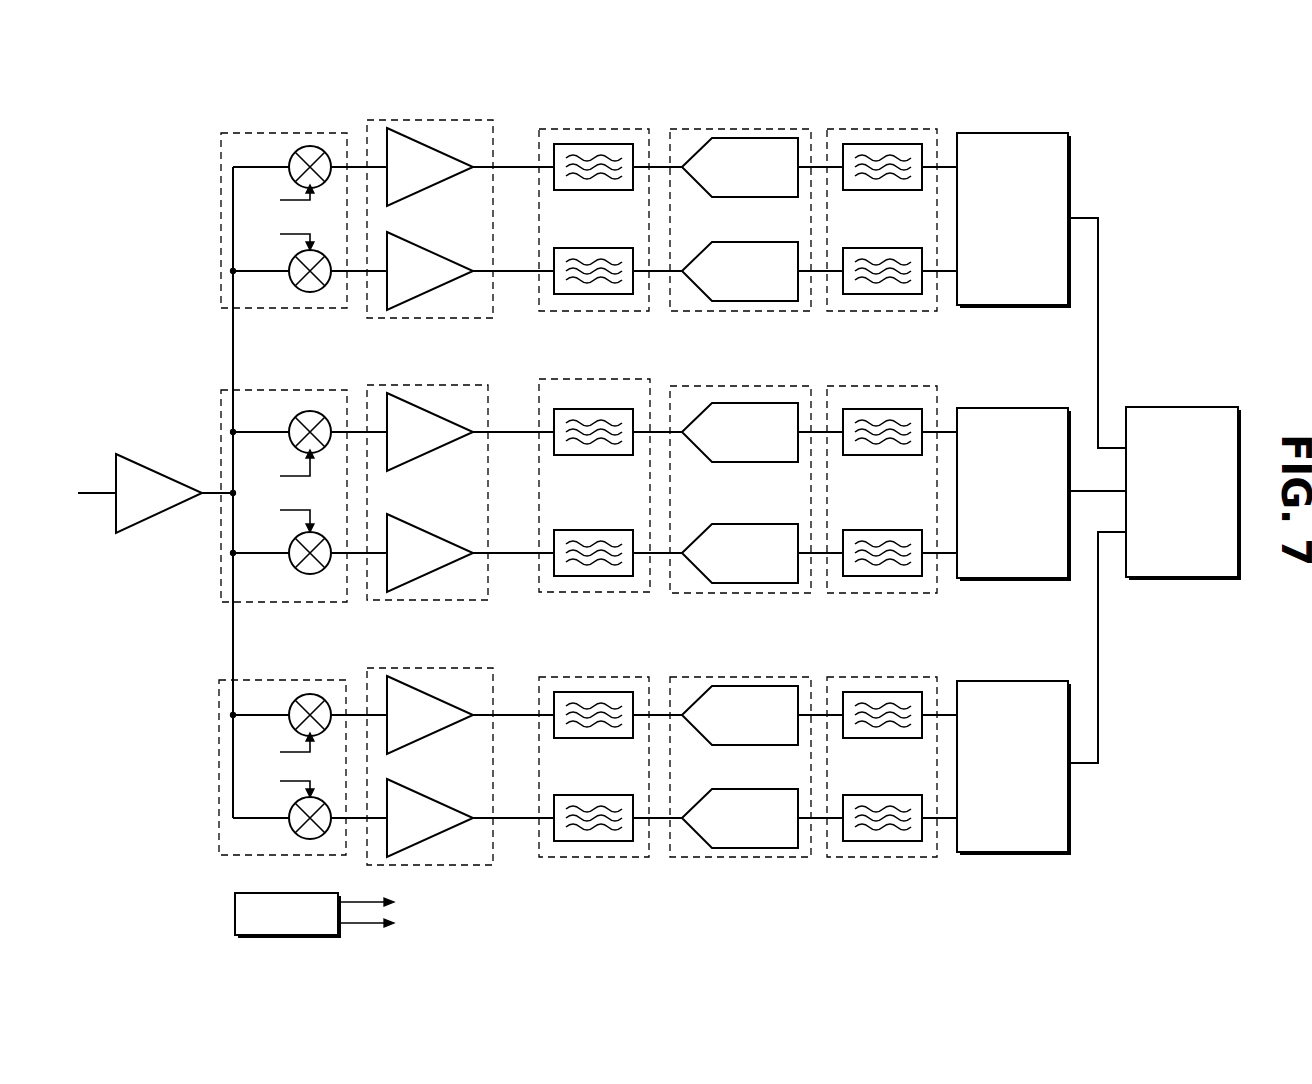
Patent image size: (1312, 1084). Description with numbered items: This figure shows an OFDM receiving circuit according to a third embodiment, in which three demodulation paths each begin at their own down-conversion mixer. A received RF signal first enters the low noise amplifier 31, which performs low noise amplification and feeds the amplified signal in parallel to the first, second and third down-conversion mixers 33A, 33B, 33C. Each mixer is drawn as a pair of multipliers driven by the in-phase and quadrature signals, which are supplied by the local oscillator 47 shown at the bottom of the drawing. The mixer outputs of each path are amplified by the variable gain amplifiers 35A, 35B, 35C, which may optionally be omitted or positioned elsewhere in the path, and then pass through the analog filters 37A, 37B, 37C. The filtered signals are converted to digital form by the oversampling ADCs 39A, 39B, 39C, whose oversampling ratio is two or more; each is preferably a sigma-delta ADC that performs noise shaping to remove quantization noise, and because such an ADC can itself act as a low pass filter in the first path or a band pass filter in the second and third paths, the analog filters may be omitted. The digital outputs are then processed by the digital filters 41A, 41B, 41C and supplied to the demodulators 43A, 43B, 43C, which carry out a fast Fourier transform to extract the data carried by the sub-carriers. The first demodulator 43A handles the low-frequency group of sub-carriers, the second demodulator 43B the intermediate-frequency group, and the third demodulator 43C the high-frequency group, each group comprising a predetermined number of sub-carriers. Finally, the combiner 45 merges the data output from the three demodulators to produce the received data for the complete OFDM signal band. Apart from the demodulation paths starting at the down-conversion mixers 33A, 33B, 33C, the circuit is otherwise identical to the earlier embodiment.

The low noise amplifier 31 is at (162, 472).
The first down-conversion mixer 33A is at (282, 133).
The second down-conversion mixer 33B is at (282, 390).
The third down-conversion mixer 33C is at (282, 680).
The first variable gain amplifier 35A is at (429, 120).
The second variable gain amplifier 35B is at (426, 385).
The third variable gain amplifier 35C is at (429, 668).
The first analog filter 37A is at (589, 129).
The second analog filter 37B is at (594, 379).
The third analog filter 37C is at (594, 677).
The first oversampling ADC 39A is at (739, 129).
The second oversampling ADC 39B is at (741, 386).
The third oversampling ADC 39C is at (741, 677).
The first digital filter 41A is at (881, 129).
The second digital filter 41B is at (881, 386).
The third digital filter 41C is at (881, 677).
The first demodulator 43A is at (1011, 133).
The second demodulator 43B is at (1011, 408).
The third demodulator 43C is at (1011, 681).
The combiner 45 is at (1181, 407).
The local oscillator 47 is at (235, 911).